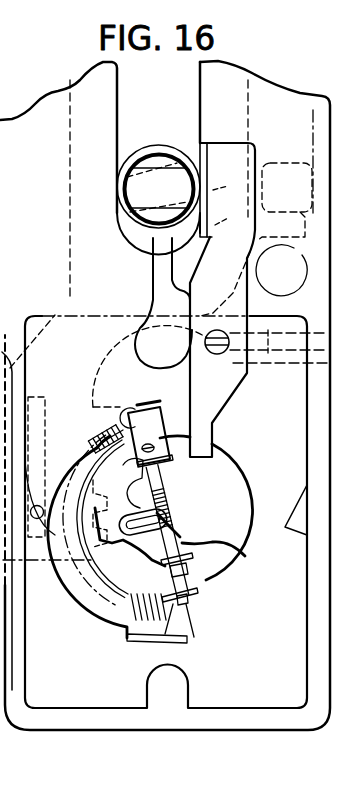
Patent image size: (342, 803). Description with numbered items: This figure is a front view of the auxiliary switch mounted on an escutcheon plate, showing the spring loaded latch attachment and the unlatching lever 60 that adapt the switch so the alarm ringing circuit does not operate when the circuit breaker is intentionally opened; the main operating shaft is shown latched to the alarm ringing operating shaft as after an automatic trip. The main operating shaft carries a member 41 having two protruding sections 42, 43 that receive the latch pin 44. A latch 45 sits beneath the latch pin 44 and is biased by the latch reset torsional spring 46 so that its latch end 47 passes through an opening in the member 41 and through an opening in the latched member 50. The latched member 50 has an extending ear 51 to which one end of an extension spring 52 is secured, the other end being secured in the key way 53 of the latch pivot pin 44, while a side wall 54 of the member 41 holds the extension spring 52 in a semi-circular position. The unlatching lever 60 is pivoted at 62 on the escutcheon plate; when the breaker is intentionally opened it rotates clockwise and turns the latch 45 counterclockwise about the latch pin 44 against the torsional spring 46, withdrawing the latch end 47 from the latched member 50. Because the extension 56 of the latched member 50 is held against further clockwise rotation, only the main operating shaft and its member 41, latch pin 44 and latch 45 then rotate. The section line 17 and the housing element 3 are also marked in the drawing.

The housing 3 is at (308, 185).
The section line 17- 17 is at (157, 100).
The member 41 is at (193, 604).
The protruding section 42 is at (160, 422).
The protruding section 43 is at (208, 578).
The latch pin 44 is at (246, 555).
The latch 45 is at (235, 480).
The latch reset torsional spring 46 is at (150, 495).
The latch end 47 is at (83, 593).
The latched member 50 is at (102, 608).
The extending ear 51 is at (152, 401).
The extension spring 52 is at (100, 418).
The key way 53 is at (198, 596).
The side wall 54 is at (148, 621).
The extension 56 is at (173, 642).
The unlatching lever 60 is at (242, 389).
The pivot 62 is at (220, 332).